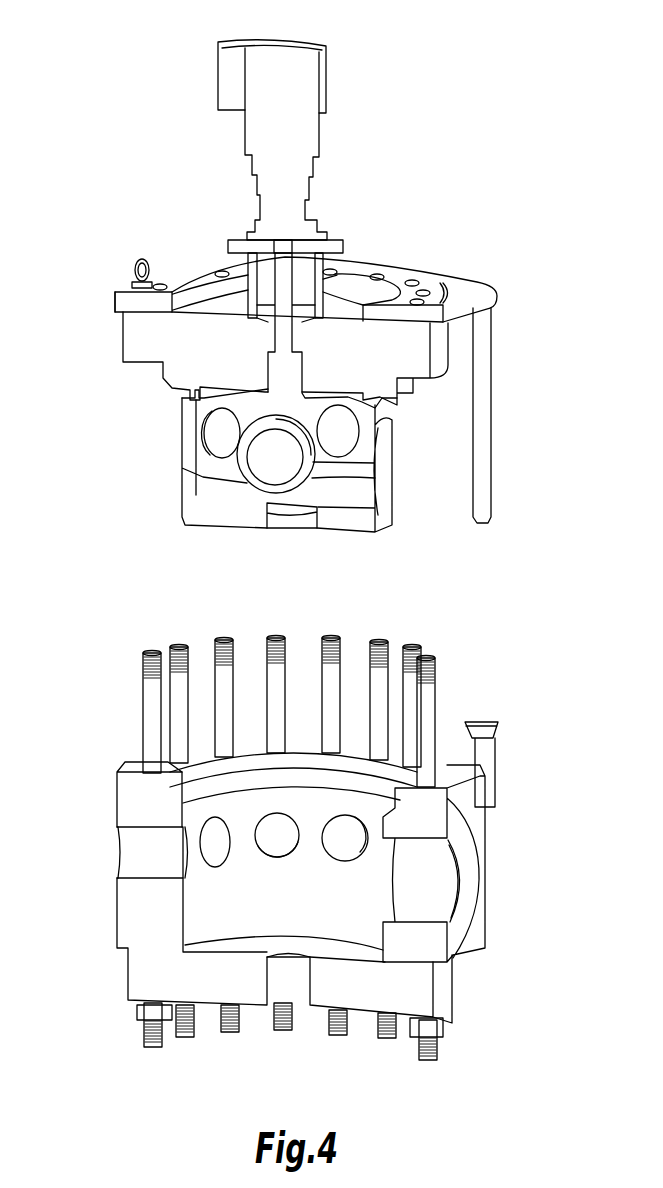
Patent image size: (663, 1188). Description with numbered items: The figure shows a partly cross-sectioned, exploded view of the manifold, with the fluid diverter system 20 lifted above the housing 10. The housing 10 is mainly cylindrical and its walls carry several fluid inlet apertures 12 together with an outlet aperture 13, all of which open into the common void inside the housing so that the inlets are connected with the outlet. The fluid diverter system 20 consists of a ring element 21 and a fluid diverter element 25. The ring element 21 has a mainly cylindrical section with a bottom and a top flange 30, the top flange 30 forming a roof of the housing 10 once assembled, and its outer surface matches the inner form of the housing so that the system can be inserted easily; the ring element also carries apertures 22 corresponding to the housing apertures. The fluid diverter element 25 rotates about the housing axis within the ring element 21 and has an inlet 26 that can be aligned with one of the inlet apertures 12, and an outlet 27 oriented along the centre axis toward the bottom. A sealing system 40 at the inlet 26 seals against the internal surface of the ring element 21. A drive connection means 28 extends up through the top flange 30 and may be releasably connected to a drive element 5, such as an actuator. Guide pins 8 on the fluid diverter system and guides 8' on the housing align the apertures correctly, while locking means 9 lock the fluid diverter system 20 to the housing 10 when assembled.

The drive element 5 is at (305, 82).
The guide pin 8 is at (509, 415).
The guide 8' is at (512, 764).
The locking means 9 is at (423, 713).
The housing 10 is at (132, 915).
The fluid inlet aperture 12 is at (137, 850).
The outlet aperture 13 is at (442, 877).
The fluid diverter system 20 is at (271, 325).
The ring element 21 is at (395, 513).
The aperture 22 is at (215, 440).
The fluid diverter element 25 is at (310, 492).
The inlet 26 is at (262, 466).
The outlet 27 is at (287, 520).
The drive connection means 28 is at (282, 306).
The top flange 30 is at (383, 348).
The sealing system 40 is at (303, 457).